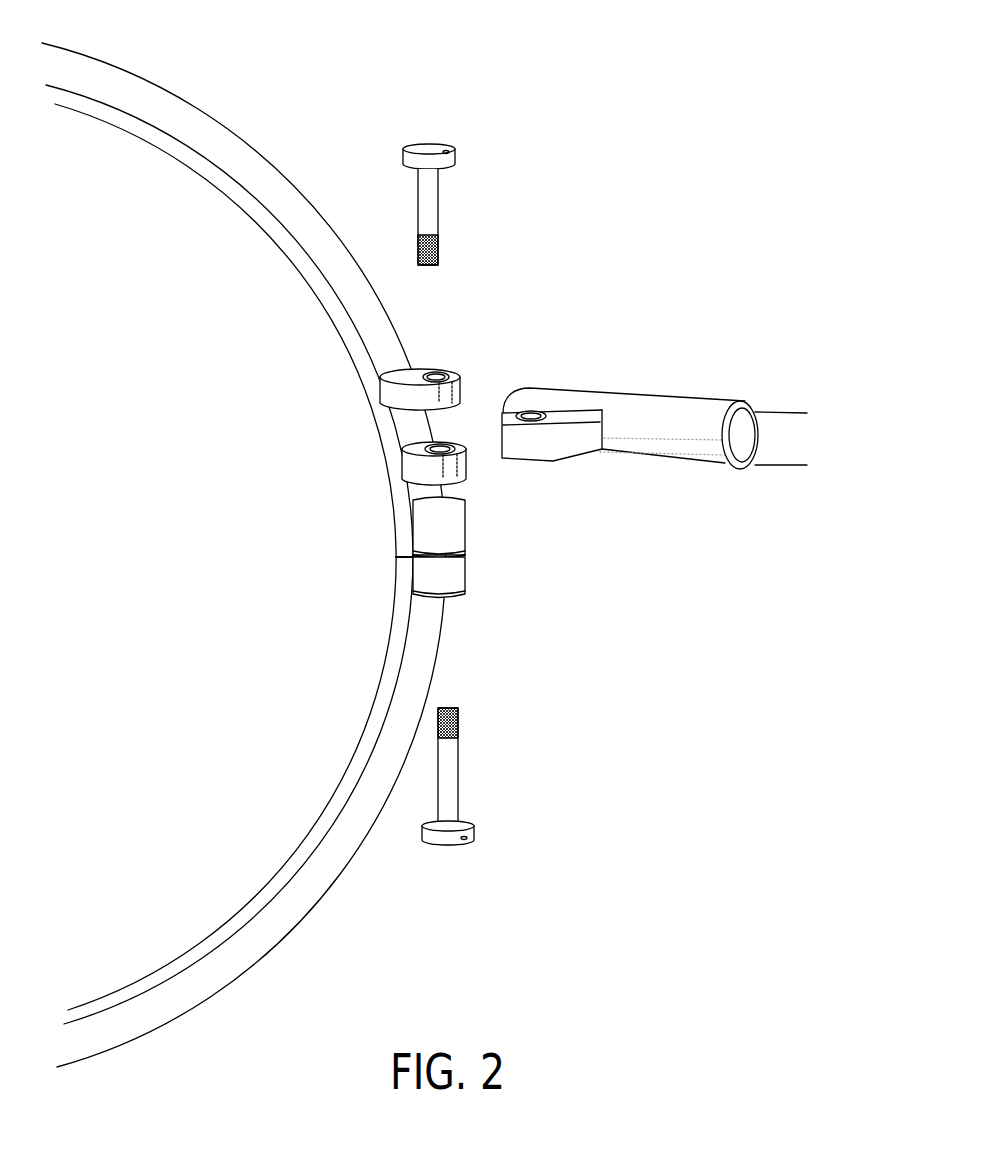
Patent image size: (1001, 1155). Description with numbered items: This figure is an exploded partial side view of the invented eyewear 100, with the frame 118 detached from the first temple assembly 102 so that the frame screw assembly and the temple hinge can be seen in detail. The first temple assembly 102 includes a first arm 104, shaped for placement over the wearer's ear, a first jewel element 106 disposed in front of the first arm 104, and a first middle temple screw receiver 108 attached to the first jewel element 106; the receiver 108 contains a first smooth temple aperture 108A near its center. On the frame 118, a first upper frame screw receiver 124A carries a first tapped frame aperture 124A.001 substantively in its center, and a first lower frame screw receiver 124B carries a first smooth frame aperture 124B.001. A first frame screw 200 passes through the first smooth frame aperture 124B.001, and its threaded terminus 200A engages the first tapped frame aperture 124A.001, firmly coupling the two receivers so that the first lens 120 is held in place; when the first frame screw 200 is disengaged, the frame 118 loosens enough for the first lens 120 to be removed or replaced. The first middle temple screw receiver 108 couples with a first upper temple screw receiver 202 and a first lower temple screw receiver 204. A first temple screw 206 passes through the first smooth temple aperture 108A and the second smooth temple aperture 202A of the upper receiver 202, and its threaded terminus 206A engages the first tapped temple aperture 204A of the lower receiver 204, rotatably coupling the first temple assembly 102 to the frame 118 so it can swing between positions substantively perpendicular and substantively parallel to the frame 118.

The eyewear 100 is at (661, 330).
The first temple assembly 102 is at (661, 391).
The first arm 104 is at (790, 412).
The first jewel element 106 is at (707, 398).
The first middle temple screw receiver 108 is at (585, 393).
The first smooth temple aperture 108A is at (533, 414).
The frame 118 is at (265, 163).
The first lens 120 is at (50, 163).
The first upper frame screw receiver 124A is at (568, 576).
The first tapped frame aperture 124A.001 is at (465, 562).
The first lower frame screw receiver 124B is at (553, 668).
The first smooth frame aperture 124B.001 is at (453, 598).
The first frame screw 200 is at (516, 797).
The threaded terminus 200A is at (457, 722).
The first upper temple screw receiver 202 is at (504, 265).
The second smooth temple aperture 202A is at (445, 369).
The first lower temple screw receiver 204 is at (492, 394).
The first tapped temple aperture 204A is at (445, 443).
The first temple screw 206 is at (466, 167).
The threaded terminus 206A is at (440, 255).